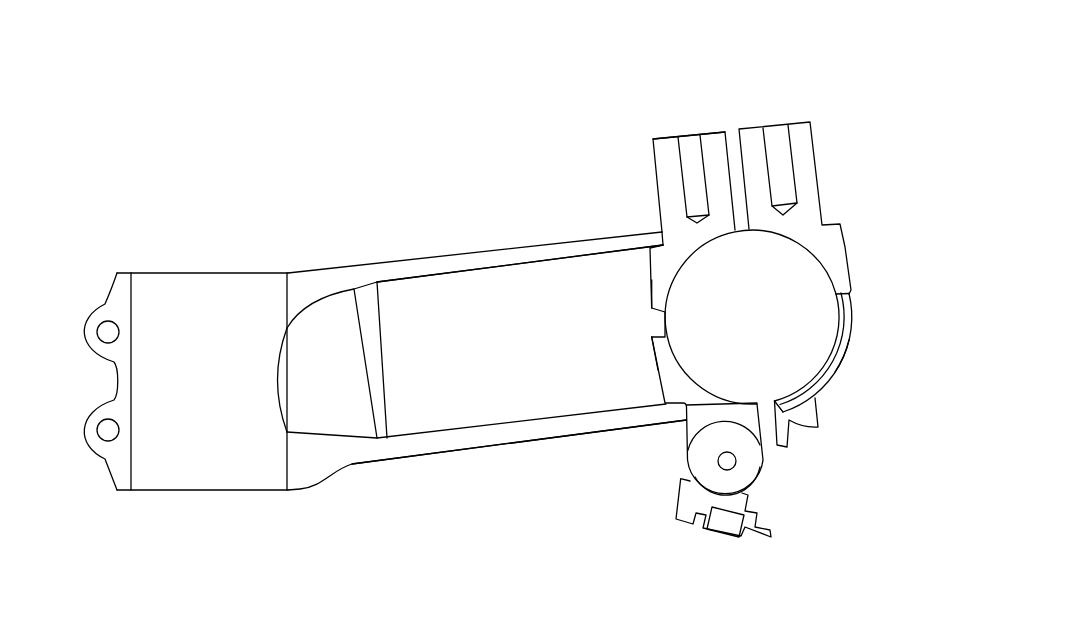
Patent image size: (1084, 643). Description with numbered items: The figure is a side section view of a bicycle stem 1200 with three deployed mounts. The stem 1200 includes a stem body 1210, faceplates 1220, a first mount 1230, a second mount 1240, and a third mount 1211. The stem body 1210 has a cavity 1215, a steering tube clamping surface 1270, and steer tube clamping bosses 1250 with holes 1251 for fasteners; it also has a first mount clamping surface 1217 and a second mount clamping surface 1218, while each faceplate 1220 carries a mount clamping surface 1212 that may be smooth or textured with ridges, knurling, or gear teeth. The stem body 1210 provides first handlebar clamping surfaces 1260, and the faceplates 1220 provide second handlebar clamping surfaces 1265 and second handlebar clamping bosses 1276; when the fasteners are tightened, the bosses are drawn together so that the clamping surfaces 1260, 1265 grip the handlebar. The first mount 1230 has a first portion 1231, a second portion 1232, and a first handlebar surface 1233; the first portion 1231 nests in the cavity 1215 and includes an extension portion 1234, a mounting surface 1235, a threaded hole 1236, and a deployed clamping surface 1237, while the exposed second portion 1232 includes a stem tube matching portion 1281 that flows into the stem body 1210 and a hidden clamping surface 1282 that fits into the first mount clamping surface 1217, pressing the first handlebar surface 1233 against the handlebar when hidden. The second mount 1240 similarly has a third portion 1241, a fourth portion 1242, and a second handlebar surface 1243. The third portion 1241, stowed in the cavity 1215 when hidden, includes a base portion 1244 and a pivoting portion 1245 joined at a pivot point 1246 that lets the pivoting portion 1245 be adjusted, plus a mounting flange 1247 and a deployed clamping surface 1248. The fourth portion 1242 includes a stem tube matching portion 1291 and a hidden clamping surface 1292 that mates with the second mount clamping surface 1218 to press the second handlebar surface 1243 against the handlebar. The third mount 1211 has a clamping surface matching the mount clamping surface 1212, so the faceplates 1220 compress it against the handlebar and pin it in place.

The stem 1200 is at (176, 98).
The stem body 1210 is at (493, 346).
The third mount 1211 is at (802, 173).
The mount clamping surface 1212 is at (827, 352).
The cavity 1215 is at (457, 327).
The first mount clamping surface 1217 is at (661, 233).
The second mount clamping surface 1218 is at (700, 401).
The faceplates 1220 is at (839, 366).
The first mount 1230 is at (656, 329).
The first portion 1231 is at (717, 157).
The second portion 1232 is at (655, 272).
The first handlebar surface 1233 is at (703, 243).
The extension portion 1234 is at (670, 182).
The mounting surface 1235 is at (707, 128).
The threaded hole 1236 is at (691, 150).
The deployed clamping surface 1237 is at (664, 234).
The second mount 1240 is at (719, 469).
The third portion 1241 is at (750, 445).
The fourth portion 1242 is at (665, 386).
The second handlebar surface 1243 is at (700, 377).
The base portion 1244 is at (844, 372).
The pivoting portion 1245 is at (717, 522).
The pivot point 1246 is at (731, 462).
The mounting flange 1247 is at (690, 517).
The deployed clamping surface 1248 is at (700, 401).
The steer tube clamping bosses 1250 is at (108, 298).
The holes 1251 is at (105, 420).
The first handlebar clamping surfaces 1260 is at (668, 326).
The second handlebar clamping surfaces 1265 is at (837, 332).
The steering tube clamping surface 1270 is at (208, 285).
The second handlebar clamping bosses 1276 is at (806, 424).
The stem tube matching portion 1281 is at (650, 294).
The hidden clamping surface 1282 is at (661, 247).
The stem tube matching portion 1291 is at (668, 373).
The hidden clamping surface 1292 is at (683, 411).